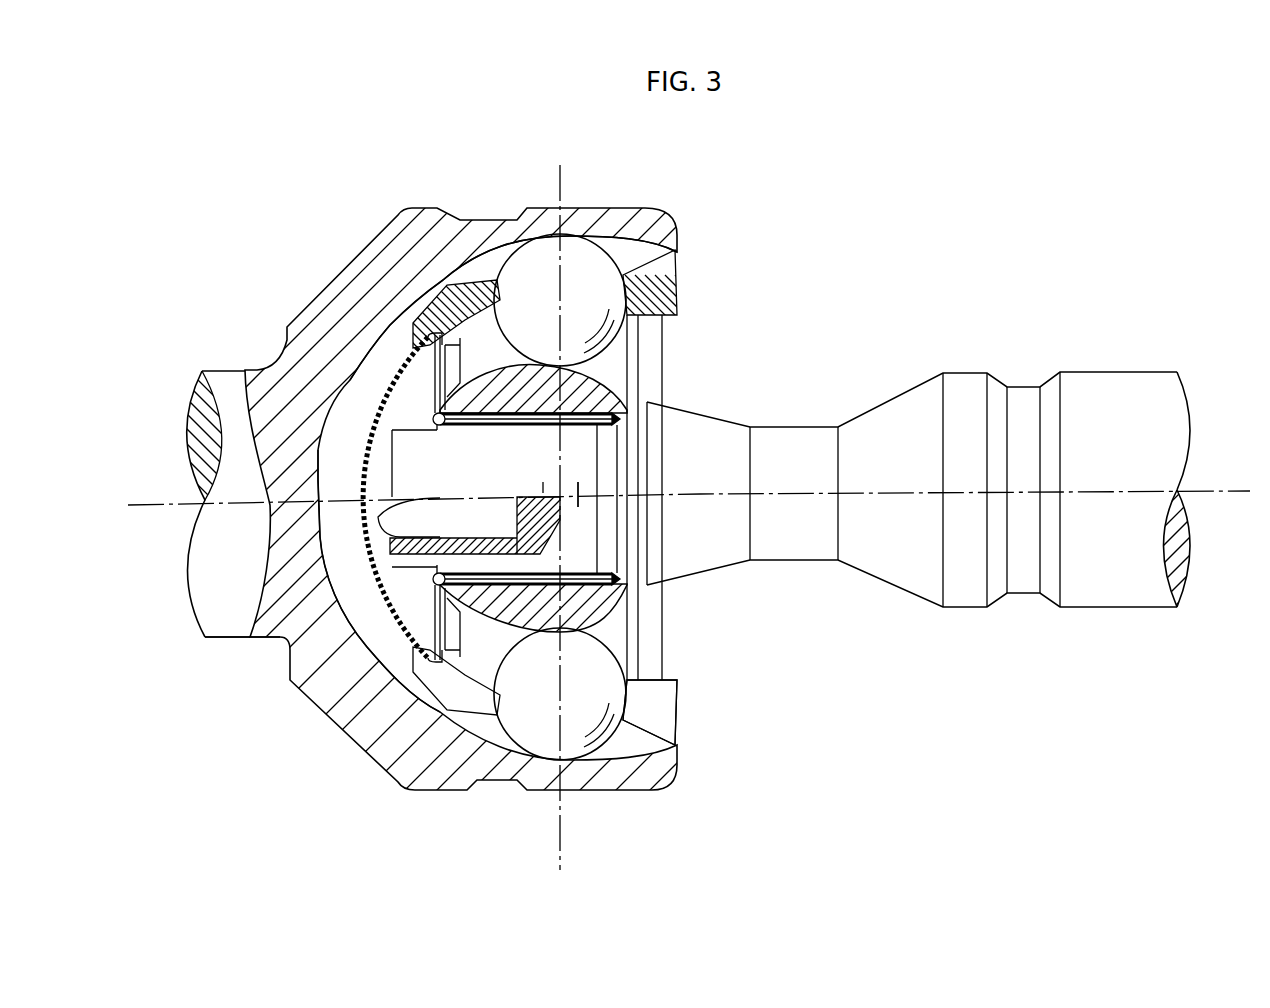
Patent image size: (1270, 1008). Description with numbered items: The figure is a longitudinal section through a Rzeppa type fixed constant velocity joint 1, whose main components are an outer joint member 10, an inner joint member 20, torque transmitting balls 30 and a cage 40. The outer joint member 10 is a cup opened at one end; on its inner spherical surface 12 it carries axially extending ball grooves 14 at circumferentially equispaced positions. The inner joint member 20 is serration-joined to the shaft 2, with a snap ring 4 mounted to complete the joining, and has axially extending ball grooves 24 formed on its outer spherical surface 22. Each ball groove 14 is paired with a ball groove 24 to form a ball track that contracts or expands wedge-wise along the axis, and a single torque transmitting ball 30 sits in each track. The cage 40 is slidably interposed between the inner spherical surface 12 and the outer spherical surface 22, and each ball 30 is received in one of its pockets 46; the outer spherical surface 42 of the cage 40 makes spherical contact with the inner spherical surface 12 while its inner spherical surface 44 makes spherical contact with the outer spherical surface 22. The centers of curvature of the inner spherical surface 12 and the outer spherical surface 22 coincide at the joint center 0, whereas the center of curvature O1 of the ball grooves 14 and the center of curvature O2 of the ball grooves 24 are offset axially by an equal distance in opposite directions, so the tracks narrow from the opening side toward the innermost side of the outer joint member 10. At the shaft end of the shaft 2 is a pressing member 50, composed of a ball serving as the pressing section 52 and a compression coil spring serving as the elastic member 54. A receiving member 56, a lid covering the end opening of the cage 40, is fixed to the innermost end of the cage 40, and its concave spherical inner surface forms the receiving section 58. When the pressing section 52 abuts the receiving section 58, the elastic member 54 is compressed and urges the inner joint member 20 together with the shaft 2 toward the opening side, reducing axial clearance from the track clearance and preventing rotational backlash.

The constant velocity joint 1 is at (780, 208).
The shaft 2 is at (1117, 383).
The snap ring 4 is at (368, 352).
The outer joint member 10 is at (380, 221).
The inner spherical surface 12 is at (473, 290).
The ball grooves 14 is at (623, 243).
The inner joint member 20 is at (632, 649).
The outer spherical surface 22 is at (478, 705).
The ball grooves 24 is at (605, 618).
The torque transmitting balls 30 is at (543, 243).
The cage 40 is at (684, 688).
The outer spherical surface 42 is at (482, 708).
The inner spherical surface 44 is at (443, 710).
The pockets 46 is at (630, 714).
The pressing member 50 is at (290, 683).
The pressing section 52 is at (372, 490).
The elastic member 54 is at (370, 700).
The receiving member 56 is at (362, 460).
The receiving section 58 is at (385, 468).
The joint center 0 is at (598, 528).
The center of curvature of the ball grooves of the outer joint member O1 is at (641, 247).
The center of curvature of the ball grooves of the inner joint member O2 is at (490, 375).